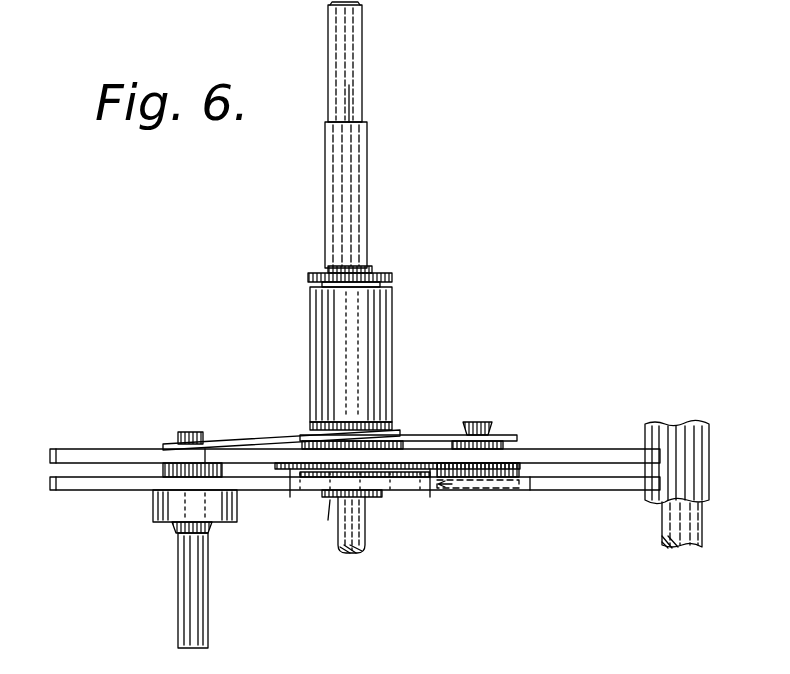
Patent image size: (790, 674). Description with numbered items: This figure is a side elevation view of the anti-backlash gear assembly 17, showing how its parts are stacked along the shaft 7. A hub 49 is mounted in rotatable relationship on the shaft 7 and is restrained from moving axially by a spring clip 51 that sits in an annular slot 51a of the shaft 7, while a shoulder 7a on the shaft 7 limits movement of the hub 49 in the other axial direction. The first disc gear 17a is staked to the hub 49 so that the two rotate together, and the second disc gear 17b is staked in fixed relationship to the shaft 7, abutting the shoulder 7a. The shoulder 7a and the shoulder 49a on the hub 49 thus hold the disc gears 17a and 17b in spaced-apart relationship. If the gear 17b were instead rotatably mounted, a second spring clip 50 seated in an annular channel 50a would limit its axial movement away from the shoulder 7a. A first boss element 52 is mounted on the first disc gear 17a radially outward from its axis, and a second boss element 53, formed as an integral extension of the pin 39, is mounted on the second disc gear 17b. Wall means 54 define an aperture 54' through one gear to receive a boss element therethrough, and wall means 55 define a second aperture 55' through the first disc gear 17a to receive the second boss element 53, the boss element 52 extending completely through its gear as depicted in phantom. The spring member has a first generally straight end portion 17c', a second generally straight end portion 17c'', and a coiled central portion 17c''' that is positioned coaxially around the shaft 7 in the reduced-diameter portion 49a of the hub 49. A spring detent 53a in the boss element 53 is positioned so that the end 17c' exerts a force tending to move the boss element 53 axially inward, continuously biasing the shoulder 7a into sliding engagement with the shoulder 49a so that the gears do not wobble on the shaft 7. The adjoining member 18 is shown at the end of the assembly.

The shaft 7 is at (365, 95).
The shoulder 7a is at (290, 497).
The anti-backlash gear assembly 17 is at (559, 432).
The first disc gear 17a is at (75, 445).
The second disc gear 17b is at (62, 490).
The first generally straight end portion 17c' is at (224, 385).
The second generally straight end portion 17c'' is at (503, 397).
The coiled central portion 17c''' is at (408, 393).
The frame post 18 is at (680, 426).
The pin 39 is at (210, 604).
The hub 49 is at (394, 318).
The shoulder 49a is at (304, 425).
The second spring clip 50 is at (372, 498).
The annular channel 50a is at (330, 500).
The spring clip 51 is at (394, 280).
The annular slot 51a is at (392, 270).
The first boss element 52 is at (494, 428).
The second boss element 53 is at (186, 446).
The spring detent 53a is at (176, 442).
The wall means 54 is at (524, 508).
The aperture 54' is at (483, 505).
The wall means 55 is at (281, 404).
The second aperture 55' is at (166, 425).